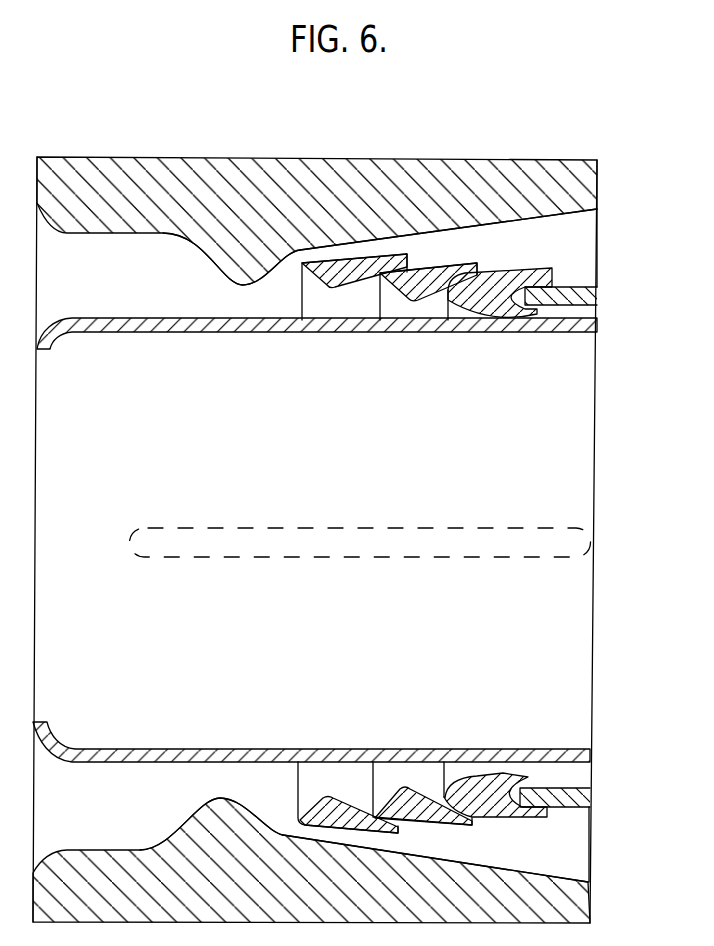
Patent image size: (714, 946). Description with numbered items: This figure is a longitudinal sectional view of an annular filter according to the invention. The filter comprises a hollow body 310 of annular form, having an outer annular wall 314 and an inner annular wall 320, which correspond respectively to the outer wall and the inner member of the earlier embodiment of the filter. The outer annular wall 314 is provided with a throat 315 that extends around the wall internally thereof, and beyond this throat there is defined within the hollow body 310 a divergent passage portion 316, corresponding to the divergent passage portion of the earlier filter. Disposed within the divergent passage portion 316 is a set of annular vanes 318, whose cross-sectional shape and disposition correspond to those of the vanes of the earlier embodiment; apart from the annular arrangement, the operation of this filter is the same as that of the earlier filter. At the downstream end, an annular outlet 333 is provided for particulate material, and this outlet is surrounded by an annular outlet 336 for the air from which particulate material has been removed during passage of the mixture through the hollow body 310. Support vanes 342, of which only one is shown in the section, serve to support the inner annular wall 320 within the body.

The hollow body 310 is at (206, 150).
The outer annular wall 314 is at (118, 172).
The throat 315 is at (248, 278).
The divergent passage portion 316 is at (512, 233).
The annular vanes 318 is at (507, 282).
The inner annular wall 320 is at (155, 325).
The annular outlet 333 is at (580, 313).
The annular outlet for air 336 is at (580, 238).
The support vanes 342 is at (362, 530).